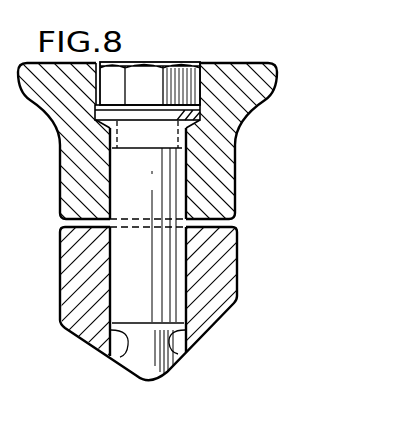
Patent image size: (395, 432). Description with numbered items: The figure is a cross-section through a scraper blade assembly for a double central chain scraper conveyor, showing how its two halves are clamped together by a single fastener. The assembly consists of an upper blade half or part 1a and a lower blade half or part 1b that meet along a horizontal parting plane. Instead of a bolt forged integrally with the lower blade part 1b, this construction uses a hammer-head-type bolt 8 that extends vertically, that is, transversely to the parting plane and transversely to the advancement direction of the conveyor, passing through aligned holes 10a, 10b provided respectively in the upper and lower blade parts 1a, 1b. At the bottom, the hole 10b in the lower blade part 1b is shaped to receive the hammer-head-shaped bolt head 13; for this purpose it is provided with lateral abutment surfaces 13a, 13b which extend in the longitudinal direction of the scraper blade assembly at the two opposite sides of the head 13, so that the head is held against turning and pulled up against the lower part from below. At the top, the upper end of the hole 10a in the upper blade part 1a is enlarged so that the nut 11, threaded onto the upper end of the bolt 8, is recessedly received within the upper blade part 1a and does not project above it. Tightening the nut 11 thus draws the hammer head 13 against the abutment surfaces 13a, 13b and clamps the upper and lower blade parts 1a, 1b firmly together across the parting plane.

The upper blade half or part 1a is at (247, 92).
The lower blade half or part 1b is at (212, 305).
The hammer-head-type bolt 8 is at (163, 163).
The hole in the upper blade part 10a is at (181, 180).
The hole in the lower blade part 10b is at (182, 271).
The nut 11 is at (173, 85).
The hammer-head-shaped bolt head 13 is at (153, 362).
The lateral abutment surface 13a is at (125, 352).
The lateral abutment surface 13b is at (182, 354).